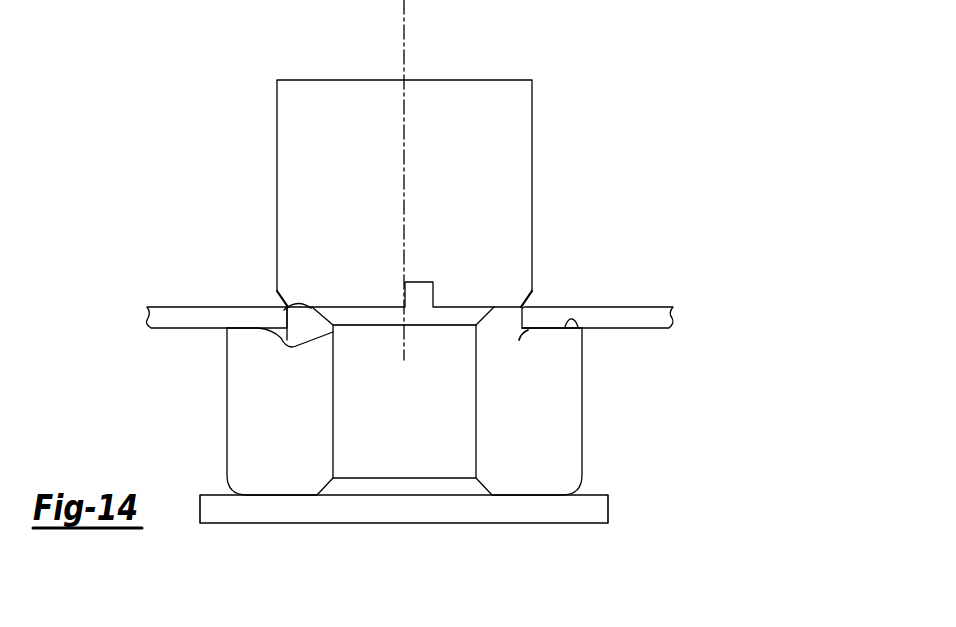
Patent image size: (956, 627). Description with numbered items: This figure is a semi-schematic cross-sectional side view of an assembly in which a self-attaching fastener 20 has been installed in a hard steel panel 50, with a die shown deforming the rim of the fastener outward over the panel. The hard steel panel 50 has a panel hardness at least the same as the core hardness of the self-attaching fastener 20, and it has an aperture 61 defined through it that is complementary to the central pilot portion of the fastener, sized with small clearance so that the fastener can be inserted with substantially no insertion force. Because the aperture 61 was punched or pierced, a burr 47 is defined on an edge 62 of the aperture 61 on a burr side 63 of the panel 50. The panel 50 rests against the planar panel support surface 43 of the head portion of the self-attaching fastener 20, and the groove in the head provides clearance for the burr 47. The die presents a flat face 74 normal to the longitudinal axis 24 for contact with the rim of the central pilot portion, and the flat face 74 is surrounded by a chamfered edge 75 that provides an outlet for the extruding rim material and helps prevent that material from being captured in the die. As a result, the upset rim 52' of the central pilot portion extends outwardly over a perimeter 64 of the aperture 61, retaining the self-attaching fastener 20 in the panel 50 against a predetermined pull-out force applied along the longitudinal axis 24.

The longitudinal axis 24 is at (407, 37).
The upset rim 52' is at (404, 193).
The perimeter of the aperture 64 is at (303, 304).
The aperture 61 is at (524, 328).
The chamfered edge 75 is at (526, 305).
The hard steel panel 50 is at (633, 312).
The burr side 63 is at (147, 325).
The burr 47 is at (333, 334).
The flat face 74 is at (385, 305).
The edge of the aperture 62 is at (526, 328).
The planar panel support surface 43 is at (575, 322).
The self-attaching fastener 20 is at (580, 432).